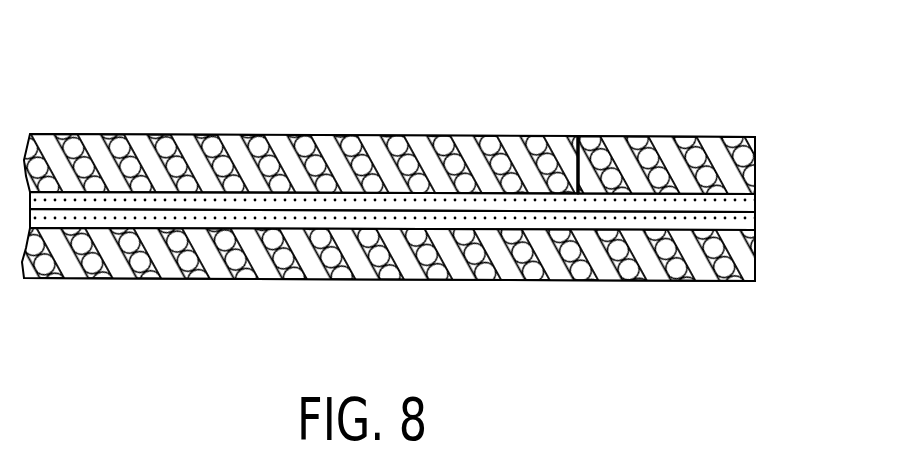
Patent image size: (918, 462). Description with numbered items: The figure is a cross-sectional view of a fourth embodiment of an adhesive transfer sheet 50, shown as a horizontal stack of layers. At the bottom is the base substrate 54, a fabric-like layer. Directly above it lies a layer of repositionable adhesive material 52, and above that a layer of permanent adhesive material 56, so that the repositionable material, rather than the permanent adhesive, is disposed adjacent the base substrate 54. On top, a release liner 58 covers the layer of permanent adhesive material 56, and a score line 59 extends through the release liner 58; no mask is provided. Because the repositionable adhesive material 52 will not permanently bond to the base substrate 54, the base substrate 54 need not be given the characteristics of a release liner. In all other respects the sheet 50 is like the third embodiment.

The adhesive transfer sheet 50 is at (739, 105).
The layer of repositionable adhesive material 52 is at (210, 218).
The base substrate 54 is at (553, 258).
The layer of permanent adhesive material 56 is at (212, 207).
The release liner 58 is at (473, 158).
The score line 59 is at (577, 170).